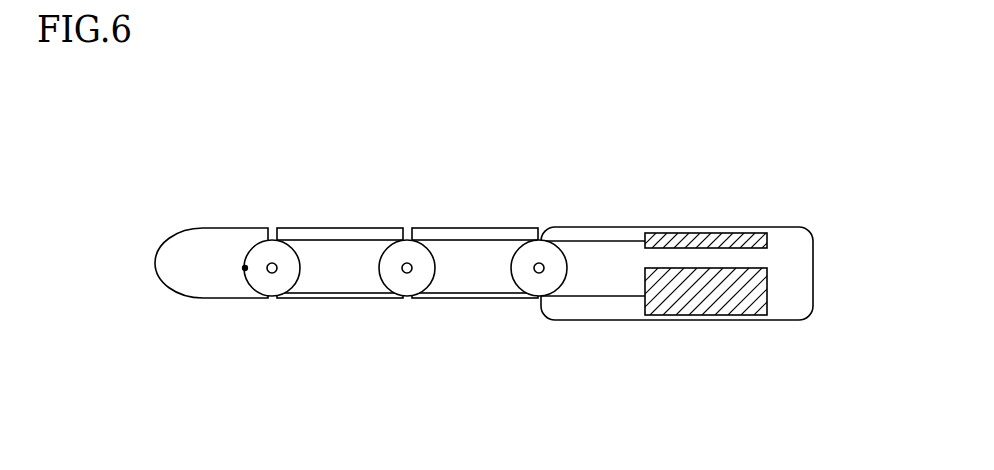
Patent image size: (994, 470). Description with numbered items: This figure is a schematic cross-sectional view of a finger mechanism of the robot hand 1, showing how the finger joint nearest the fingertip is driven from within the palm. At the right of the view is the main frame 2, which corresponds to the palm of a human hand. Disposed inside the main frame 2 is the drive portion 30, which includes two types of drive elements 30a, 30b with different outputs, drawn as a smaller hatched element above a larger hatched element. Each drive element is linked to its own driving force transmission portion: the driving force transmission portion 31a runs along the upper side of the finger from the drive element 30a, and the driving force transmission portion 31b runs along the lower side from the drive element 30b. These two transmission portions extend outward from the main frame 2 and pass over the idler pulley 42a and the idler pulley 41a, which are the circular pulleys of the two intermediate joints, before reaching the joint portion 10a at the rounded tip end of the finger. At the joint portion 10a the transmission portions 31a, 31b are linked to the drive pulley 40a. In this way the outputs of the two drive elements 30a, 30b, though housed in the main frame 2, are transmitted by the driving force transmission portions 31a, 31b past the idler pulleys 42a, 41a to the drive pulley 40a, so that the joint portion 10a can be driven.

The robot hand 1 is at (695, 272).
The main frame 2 is at (803, 248).
The joint portion 10a is at (290, 278).
The drive portion 30 is at (699, 271).
The drive element 30a is at (686, 240).
The drive element 30b is at (720, 295).
The driving force transmission portion 31a is at (490, 237).
The driving force transmission portion 31b is at (474, 300).
The drive pulley 40a is at (262, 257).
The idler pulley 41a is at (422, 263).
The idler pulley 42a is at (548, 253).